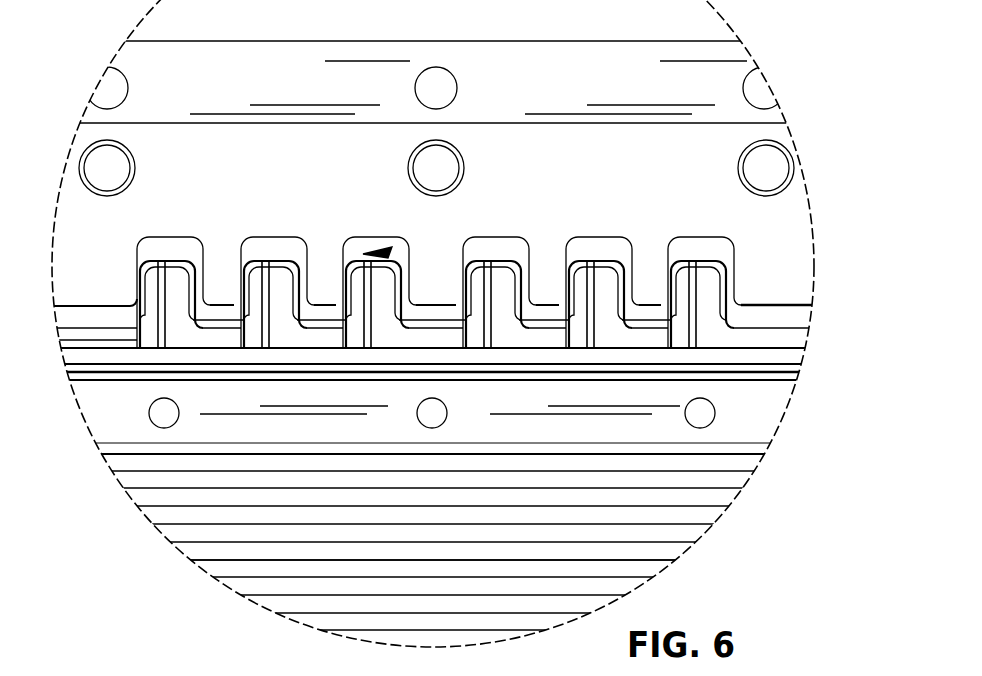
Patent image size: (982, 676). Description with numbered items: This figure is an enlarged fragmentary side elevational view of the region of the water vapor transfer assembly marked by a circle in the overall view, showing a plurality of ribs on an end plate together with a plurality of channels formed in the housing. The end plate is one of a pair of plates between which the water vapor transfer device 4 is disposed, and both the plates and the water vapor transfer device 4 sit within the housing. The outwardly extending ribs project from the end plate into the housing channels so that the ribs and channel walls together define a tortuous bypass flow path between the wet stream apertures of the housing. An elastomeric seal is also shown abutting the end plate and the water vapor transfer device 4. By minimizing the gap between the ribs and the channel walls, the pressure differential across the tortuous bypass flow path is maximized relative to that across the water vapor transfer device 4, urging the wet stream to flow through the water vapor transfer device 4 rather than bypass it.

The water vapor transfer device 4 is at (650, 547).